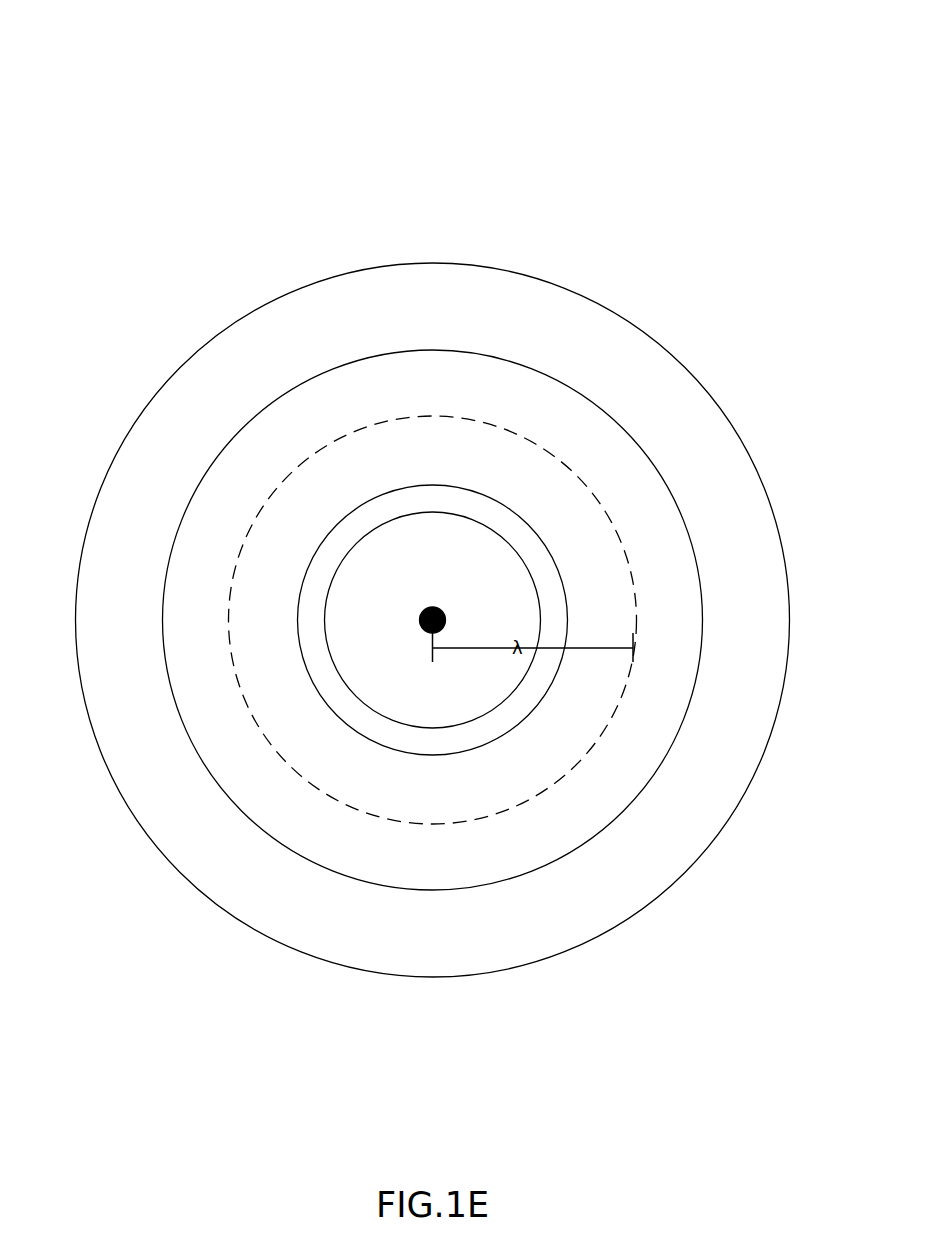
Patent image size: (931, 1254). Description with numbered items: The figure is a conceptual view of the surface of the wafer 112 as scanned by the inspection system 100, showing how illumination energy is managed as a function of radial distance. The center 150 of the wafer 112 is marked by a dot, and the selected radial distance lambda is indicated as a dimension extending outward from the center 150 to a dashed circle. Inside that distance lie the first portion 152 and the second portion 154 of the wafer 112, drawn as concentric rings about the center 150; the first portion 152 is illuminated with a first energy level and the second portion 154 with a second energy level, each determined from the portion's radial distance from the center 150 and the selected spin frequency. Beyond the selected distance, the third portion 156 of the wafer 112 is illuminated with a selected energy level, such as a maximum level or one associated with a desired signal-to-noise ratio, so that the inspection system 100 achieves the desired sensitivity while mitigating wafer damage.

The inspection system 100 is at (163, 88).
The wafer 112 is at (232, 322).
The third portion 156 is at (283, 397).
The second portion 154 is at (368, 503).
The first portion 152 is at (512, 548).
The center 150 is at (428, 608).